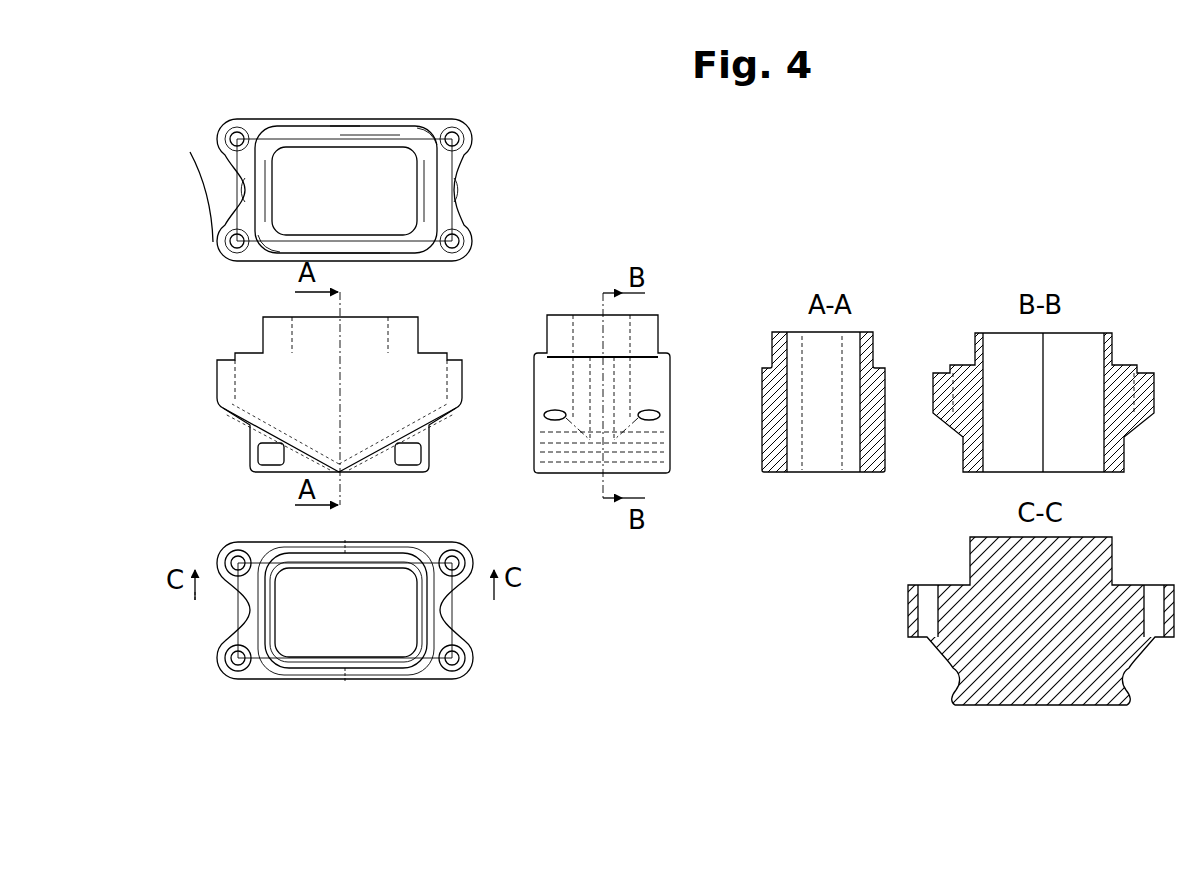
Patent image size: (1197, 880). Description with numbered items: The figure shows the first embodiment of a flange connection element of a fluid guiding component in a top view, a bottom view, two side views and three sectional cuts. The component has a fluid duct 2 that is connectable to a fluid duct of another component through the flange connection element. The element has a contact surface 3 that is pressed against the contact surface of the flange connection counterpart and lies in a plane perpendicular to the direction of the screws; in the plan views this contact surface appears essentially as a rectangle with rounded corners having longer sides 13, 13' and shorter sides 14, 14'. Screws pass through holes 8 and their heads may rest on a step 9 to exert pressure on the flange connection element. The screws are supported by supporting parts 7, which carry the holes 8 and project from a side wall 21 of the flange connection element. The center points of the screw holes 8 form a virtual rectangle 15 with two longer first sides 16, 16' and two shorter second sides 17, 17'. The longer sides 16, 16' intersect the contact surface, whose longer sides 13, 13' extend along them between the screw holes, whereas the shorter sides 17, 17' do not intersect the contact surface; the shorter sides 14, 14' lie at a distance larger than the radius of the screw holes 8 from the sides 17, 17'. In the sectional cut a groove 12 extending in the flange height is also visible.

The fluid duct 2 is at (326, 190).
The contact surface 3 is at (363, 133).
The supporting parts 7 is at (458, 381).
The holes 8 is at (454, 238).
The step 9 is at (222, 133).
The groove 12 is at (962, 685).
The longer side of contact surface 13 is at (346, 394).
The longer side of contact surface 13' is at (368, 401).
The shorter side of contact surface 14 is at (274, 344).
The shorter side of contact surface 14' is at (451, 393).
The virtual rectangle 15 is at (341, 128).
The longer first side of virtual rectangle 16 is at (382, 405).
The longer first side of virtual rectangle 16' is at (283, 400).
The shorter second side of virtual rectangle 17 is at (185, 406).
The shorter second side of virtual rectangle 17' is at (518, 380).
The side wall 21 is at (440, 435).